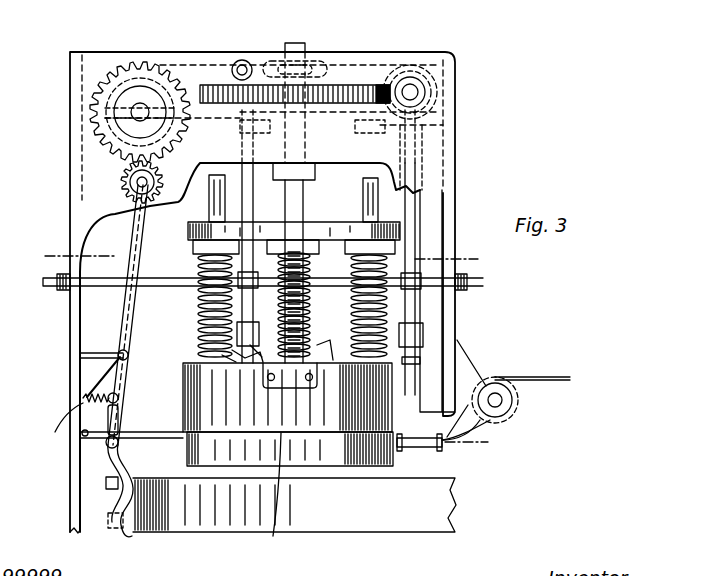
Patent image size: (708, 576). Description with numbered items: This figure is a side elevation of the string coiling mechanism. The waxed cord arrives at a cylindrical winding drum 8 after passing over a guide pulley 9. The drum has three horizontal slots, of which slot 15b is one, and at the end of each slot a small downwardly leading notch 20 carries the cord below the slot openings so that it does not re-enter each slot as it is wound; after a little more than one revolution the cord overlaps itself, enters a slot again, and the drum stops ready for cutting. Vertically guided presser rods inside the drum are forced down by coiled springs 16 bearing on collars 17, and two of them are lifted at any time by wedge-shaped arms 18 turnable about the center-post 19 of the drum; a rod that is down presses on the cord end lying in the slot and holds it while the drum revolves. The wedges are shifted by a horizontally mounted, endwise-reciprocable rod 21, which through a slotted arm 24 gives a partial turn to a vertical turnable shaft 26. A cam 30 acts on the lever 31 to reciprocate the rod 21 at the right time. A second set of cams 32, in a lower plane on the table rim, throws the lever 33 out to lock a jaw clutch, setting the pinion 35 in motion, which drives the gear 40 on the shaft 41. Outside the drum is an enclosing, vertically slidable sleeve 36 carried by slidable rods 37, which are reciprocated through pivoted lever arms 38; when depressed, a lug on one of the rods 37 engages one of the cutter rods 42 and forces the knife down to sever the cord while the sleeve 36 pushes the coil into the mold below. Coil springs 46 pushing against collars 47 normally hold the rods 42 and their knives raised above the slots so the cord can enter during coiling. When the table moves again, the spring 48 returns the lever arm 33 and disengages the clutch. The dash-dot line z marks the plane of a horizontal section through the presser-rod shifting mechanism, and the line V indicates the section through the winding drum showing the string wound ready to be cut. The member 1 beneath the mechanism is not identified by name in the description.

The base plate 1 is at (370, 518).
The cylindrical drum 8 is at (395, 463).
The guide pulley 9 is at (498, 380).
The slot 15b is at (271, 496).
The coiled springs 16 is at (318, 312).
The collars 17 is at (318, 355).
The wedge-shaped arms 18 is at (243, 366).
The center-post of the drum 19 is at (425, 434).
The downwardly leading notch 20 is at (246, 440).
The horizontally mounted rod 21 is at (180, 286).
The slotted arm 24 is at (420, 212).
The vertical turnable shaft 26 is at (330, 252).
The cam 30 is at (106, 483).
The lever 31 is at (107, 420).
The cams 32 is at (123, 530).
The lever 33 is at (132, 342).
The pinion 35 is at (115, 181).
The vertically slidable sleeve 36 is at (287, 397).
The slidable rods 37 is at (303, 48).
The pivoted lever arms 38 is at (192, 63).
The gear 40 is at (110, 87).
The shaft 41 is at (146, 116).
The rods 42 is at (209, 204).
The coil springs 46 is at (200, 314).
The collars 47 is at (195, 247).
The spring 48 is at (90, 403).
The section line x—x z is at (259, 257).
The section line V— V is at (178, 436).